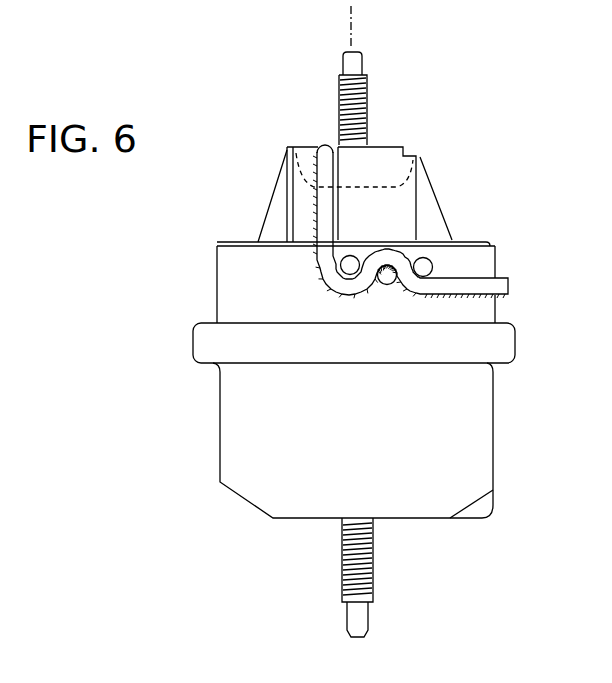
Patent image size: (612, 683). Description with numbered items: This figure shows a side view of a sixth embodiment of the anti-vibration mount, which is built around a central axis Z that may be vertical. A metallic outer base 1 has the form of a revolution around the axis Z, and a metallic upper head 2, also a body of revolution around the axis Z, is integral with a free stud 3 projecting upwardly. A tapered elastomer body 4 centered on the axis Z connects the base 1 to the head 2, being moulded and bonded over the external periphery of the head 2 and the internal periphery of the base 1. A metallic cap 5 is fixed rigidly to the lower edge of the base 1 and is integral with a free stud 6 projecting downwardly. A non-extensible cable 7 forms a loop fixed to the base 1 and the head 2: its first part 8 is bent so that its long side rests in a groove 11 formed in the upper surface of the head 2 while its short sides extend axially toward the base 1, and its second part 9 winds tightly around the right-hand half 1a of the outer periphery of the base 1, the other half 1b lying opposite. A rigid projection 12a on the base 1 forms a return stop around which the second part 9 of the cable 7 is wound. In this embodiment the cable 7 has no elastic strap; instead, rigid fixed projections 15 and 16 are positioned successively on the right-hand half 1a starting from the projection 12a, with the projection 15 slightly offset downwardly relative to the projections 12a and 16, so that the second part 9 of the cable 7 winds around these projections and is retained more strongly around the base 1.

The axis Z is at (348, 24).
The metallic outer base 1 is at (238, 260).
The right-hand half of the base 1a is at (480, 262).
The housing left wall portion 1b is at (235, 280).
The metallic upper head 2 is at (375, 157).
The free stud 3 is at (364, 88).
The elastomer body 4 is at (393, 208).
The metallic cap 5 is at (243, 442).
The free stud 6 is at (345, 585).
The cable 7 is at (317, 221).
The first part of the cable 8 is at (320, 170).
The second part of the cable 9 is at (509, 286).
The groove 11 is at (318, 147).
The rigid projection 12a is at (352, 277).
The projection 15 is at (392, 286).
The projection 16 is at (430, 260).